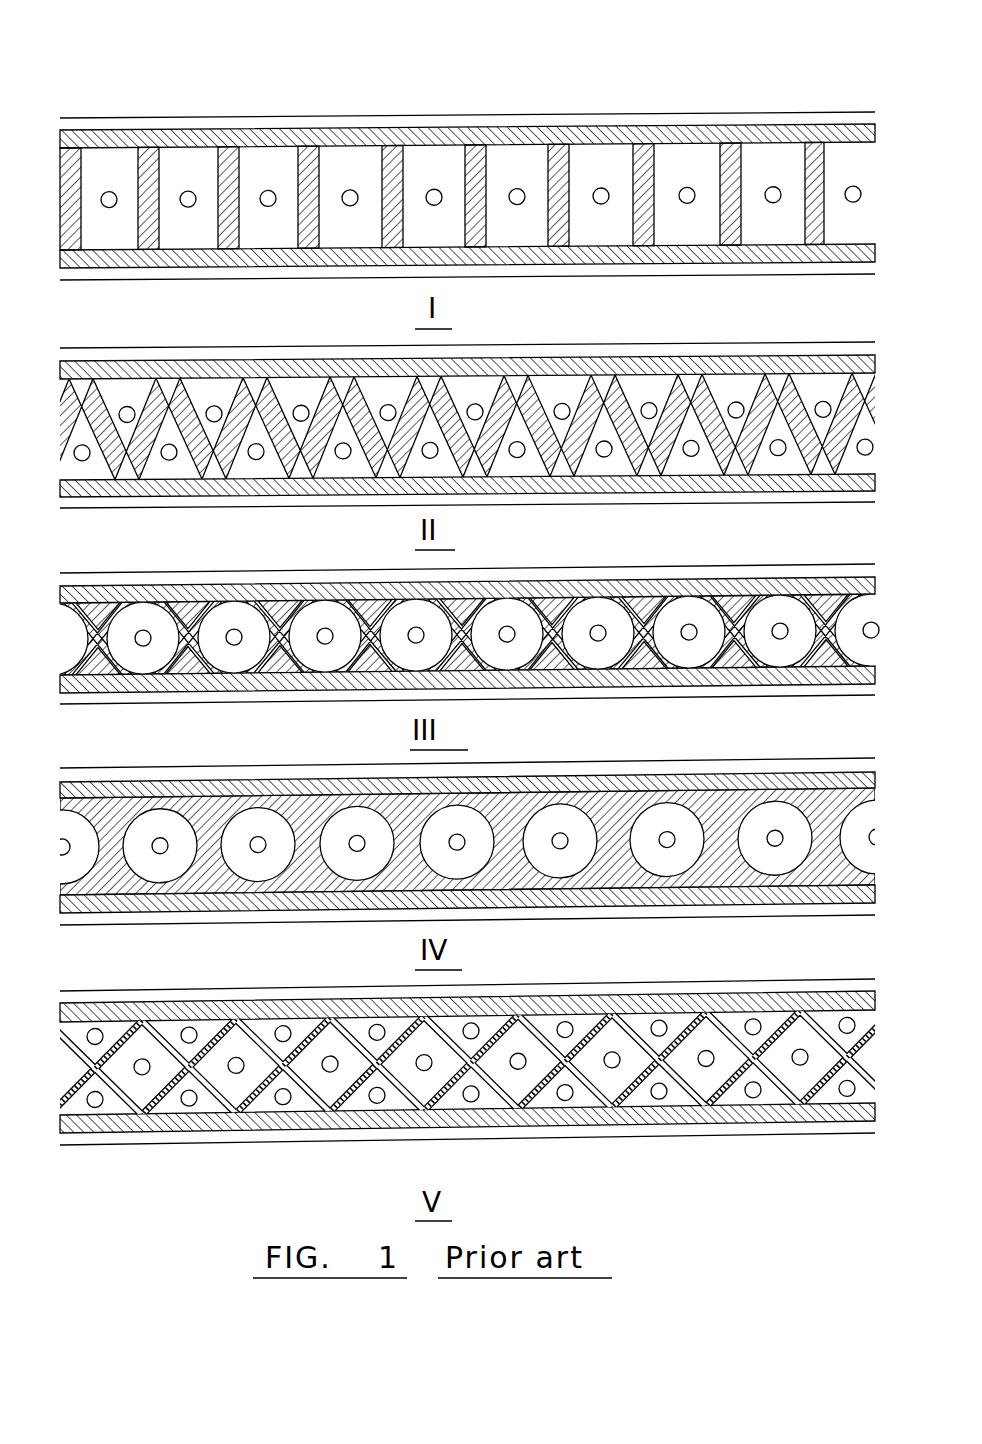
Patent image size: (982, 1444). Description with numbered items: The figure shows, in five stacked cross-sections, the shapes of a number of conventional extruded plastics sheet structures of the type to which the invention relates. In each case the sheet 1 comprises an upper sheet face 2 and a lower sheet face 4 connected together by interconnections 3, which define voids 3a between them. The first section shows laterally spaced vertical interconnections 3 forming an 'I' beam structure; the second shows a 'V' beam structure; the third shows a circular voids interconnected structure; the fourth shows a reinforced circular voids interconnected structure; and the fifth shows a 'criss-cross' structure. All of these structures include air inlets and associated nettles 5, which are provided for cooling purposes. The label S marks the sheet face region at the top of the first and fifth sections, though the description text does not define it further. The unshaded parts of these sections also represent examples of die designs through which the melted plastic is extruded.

The sheet 1 is at (573, 104).
The upper sheet face 2 is at (619, 126).
The interconnections 3 is at (655, 176).
The voids 3a is at (617, 233).
The lower sheet face 4 is at (708, 258).
The nettles 5 is at (771, 190).
The skin layer S is at (478, 124).